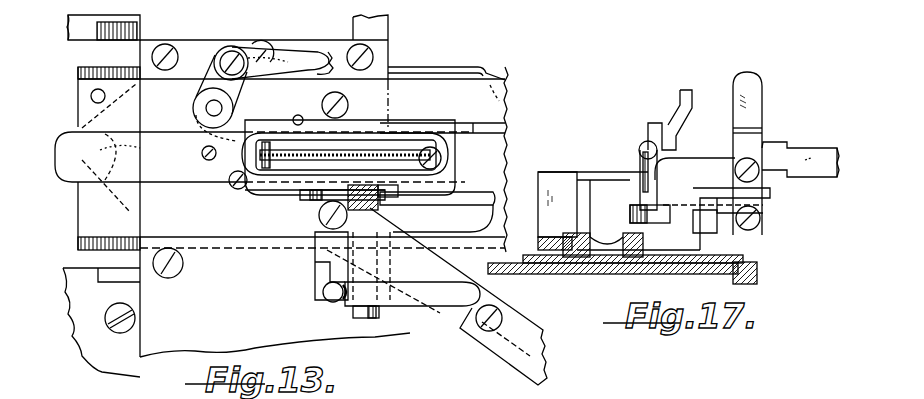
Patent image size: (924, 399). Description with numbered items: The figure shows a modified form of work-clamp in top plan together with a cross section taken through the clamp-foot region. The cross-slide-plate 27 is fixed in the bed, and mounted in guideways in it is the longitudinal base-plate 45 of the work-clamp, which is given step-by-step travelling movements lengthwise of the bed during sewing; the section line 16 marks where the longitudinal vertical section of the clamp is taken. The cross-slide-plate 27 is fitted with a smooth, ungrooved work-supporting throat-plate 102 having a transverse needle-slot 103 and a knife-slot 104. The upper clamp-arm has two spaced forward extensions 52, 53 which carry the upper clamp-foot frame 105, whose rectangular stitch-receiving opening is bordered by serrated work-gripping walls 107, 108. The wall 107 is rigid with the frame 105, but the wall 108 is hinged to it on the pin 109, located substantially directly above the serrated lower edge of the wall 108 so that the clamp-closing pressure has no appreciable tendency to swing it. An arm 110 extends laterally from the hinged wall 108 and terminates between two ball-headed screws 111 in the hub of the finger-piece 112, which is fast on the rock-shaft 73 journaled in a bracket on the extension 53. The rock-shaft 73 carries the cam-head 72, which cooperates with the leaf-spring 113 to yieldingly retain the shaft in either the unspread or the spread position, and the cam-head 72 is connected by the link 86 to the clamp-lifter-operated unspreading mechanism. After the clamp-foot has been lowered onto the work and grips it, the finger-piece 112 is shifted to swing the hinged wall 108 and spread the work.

In FIG. 13, the section line 16 is at (200, 153).
In FIG. 13, the cross-slide-plate 27 is at (156, 346).
In FIG. 13, the base-plate 45 is at (86, 233).
In FIG. 13, the forward extension 52 is at (493, 87).
In FIG. 13, the forward extension 53 is at (510, 355).
In FIG. 17, the cam-head 72 is at (638, 208).
In FIG. 13, the rock-shaft 73 is at (378, 319).
In FIG. 17, the rock-shaft 73 is at (662, 208).
In FIG. 13, the link 86 is at (463, 198).
In FIG. 13, the throat-plate 102 is at (262, 157).
In FIG. 17, the throat-plate 102 is at (591, 273).
In FIG. 13, the needle-slot 103 is at (235, 106).
In FIG. 13, the knife-slot 104 is at (375, 155).
In FIG. 17, the knife-slot 104 is at (608, 273).
In FIG. 13, the upper clamp-foot frame 105 is at (304, 95).
In FIG. 17, the serrated work-gripping wall 107 is at (590, 229).
In FIG. 17, the serrated work-gripping wall 108 is at (628, 246).
In FIG. 17, the hinge-pin 109 is at (638, 265).
In FIG. 13, the arm 110 is at (318, 268).
In FIG. 17, the arm 110 is at (700, 188).
In FIG. 13, the ball-headed screws 111 is at (331, 302).
In FIG. 17, the ball-headed screws 111 is at (769, 180).
In FIG. 13, the finger-piece 112 is at (412, 301).
In FIG. 17, the finger-piece 112 is at (760, 94).
In FIG. 13, the leaf-spring 113 is at (315, 191).
In FIG. 17, the leaf-spring 113 is at (655, 223).